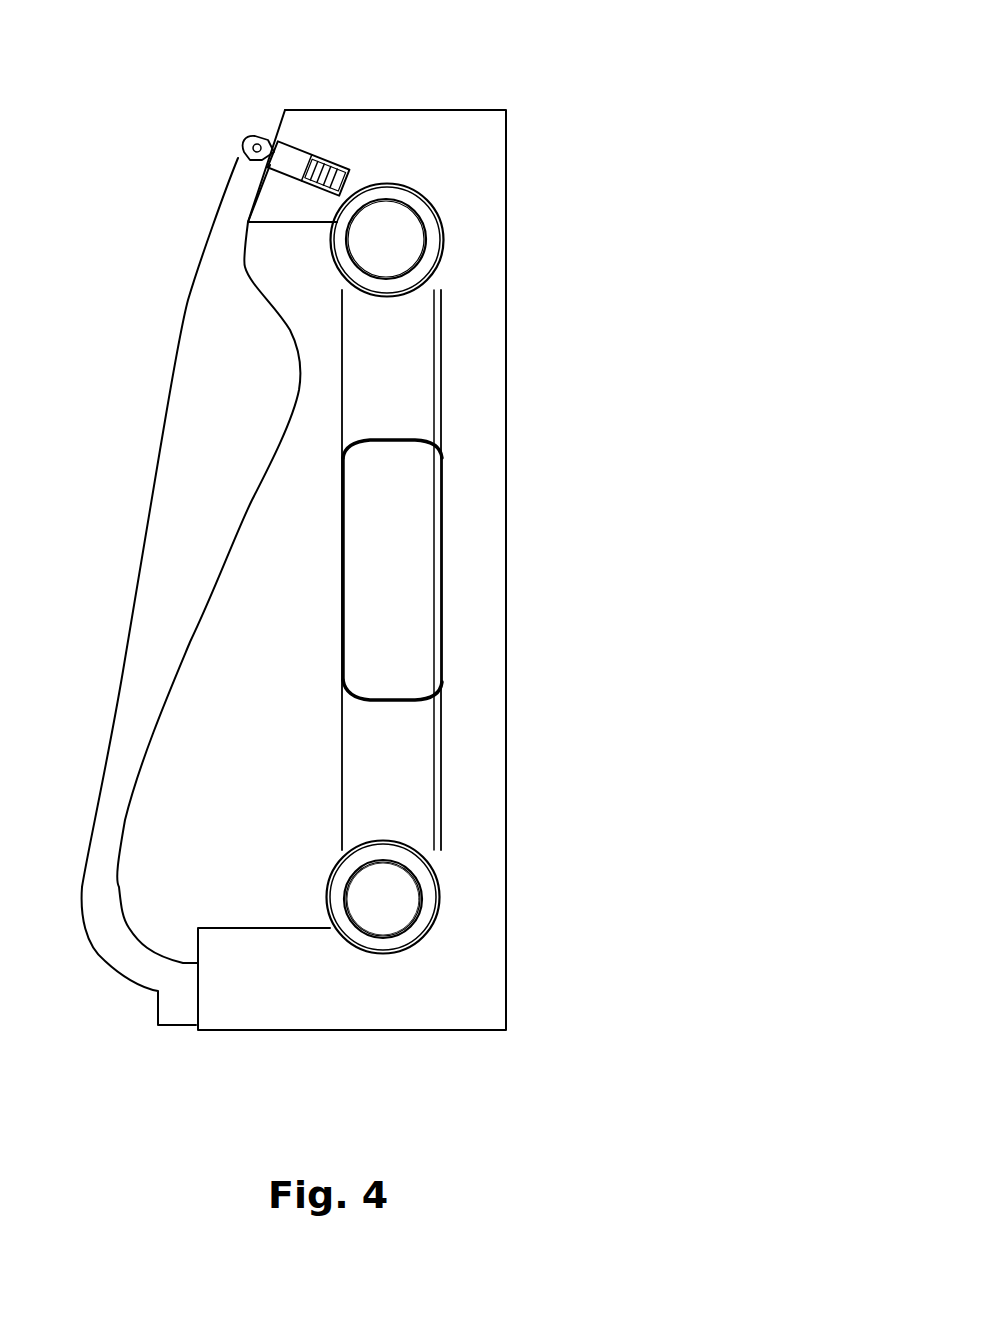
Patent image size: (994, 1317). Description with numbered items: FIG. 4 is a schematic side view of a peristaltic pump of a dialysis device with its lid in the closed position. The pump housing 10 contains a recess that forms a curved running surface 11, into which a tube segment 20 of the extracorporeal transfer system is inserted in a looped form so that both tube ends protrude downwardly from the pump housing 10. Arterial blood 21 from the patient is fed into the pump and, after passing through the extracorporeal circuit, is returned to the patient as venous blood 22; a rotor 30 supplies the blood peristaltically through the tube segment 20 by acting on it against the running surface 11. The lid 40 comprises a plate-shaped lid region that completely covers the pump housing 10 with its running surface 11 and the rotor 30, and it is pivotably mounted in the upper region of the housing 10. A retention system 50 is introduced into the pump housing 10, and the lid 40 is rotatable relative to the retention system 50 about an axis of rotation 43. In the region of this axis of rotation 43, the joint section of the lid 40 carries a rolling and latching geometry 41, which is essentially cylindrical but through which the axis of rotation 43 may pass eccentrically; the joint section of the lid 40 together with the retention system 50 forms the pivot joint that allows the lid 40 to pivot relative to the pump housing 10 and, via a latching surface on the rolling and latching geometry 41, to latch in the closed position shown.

The pump housing 10 is at (466, 128).
The running surface 11 is at (415, 947).
The tube segment 20 is at (410, 412).
The arterial blood 21 is at (428, 898).
The venous blood 22 is at (425, 255).
The rotor 30 is at (417, 573).
The lid 40 is at (172, 472).
The rolling and latching geometry 41 is at (247, 143).
The axis of rotation 43 is at (246, 158).
The retention system 50 is at (315, 142).